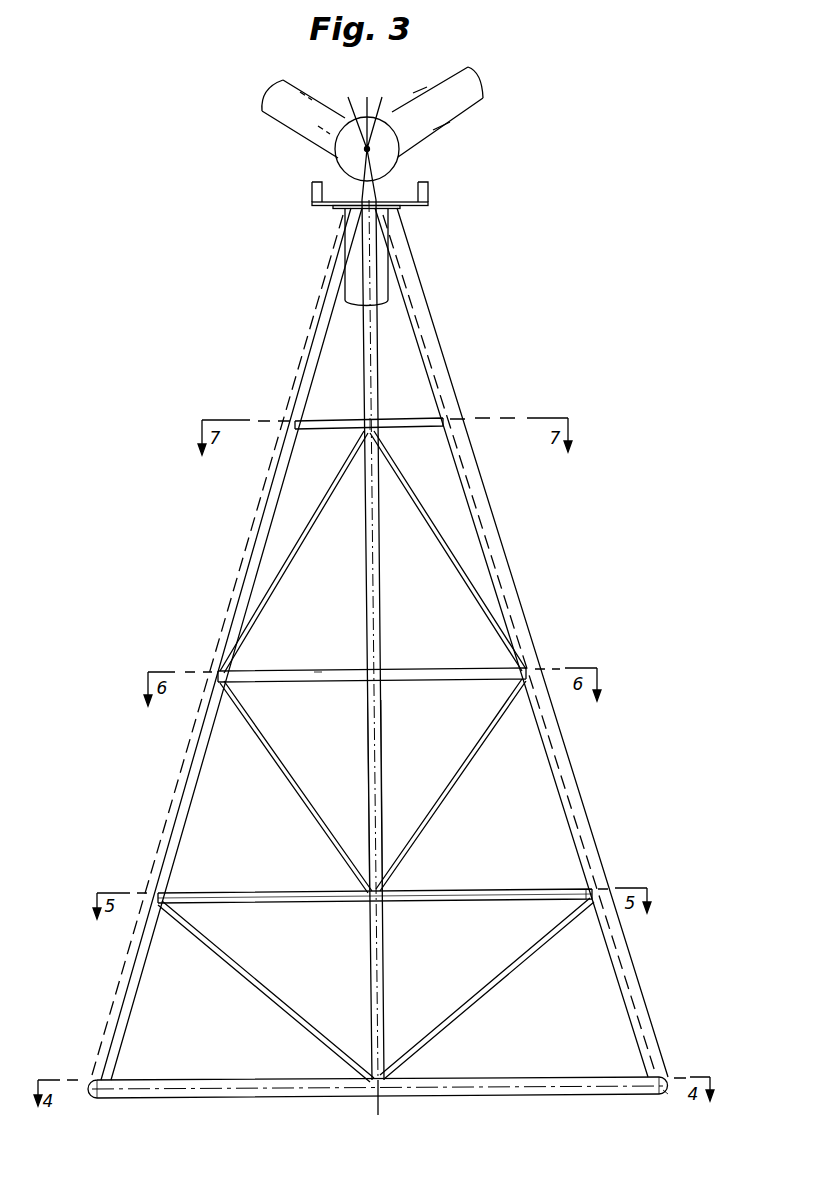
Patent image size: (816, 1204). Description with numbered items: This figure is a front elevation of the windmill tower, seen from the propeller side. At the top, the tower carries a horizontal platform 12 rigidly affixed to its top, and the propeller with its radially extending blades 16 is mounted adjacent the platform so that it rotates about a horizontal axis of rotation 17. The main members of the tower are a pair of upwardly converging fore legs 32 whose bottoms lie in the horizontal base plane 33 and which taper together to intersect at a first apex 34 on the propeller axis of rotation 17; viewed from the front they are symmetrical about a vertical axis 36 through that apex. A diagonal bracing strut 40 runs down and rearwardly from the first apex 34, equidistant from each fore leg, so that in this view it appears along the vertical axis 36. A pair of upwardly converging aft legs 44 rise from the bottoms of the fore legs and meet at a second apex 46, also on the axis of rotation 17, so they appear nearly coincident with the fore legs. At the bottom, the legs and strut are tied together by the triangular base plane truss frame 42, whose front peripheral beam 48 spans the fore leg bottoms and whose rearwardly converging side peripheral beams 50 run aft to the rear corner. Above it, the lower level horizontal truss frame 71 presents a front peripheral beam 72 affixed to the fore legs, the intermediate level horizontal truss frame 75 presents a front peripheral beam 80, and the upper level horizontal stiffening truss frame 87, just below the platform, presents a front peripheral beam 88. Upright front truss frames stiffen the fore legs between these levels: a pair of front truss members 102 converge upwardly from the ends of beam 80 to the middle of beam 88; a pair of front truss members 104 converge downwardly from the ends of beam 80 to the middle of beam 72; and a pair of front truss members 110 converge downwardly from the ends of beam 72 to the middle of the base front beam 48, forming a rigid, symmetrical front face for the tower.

The platform 12 is at (312, 203).
The propeller blade 16 is at (300, 138).
The horizontal axis of rotation 17 is at (392, 112).
The second apex 46 is at (338, 107).
The first apex 34 is at (367, 149).
The fore legs 32 is at (256, 522).
The aft legs 44 is at (232, 588).
The vertical axis 36 is at (375, 608).
The diagonal bracing strut 40 is at (384, 762).
The upper level horizontal stiffening truss frame 87 is at (383, 415).
The front peripheral beam 88 is at (428, 425).
The front truss members 102 is at (291, 560).
The intermediate level horizontal truss frame 75 is at (318, 671).
The front peripheral beam 80 is at (418, 672).
The front truss members 104 is at (284, 773).
The lower level horizontal truss frame 71 is at (530, 886).
The front peripheral beam 72 is at (444, 888).
The front truss members 110 is at (282, 991).
The base plane truss frame 42 is at (540, 1073).
The front peripheral beam 48 is at (328, 1099).
The side peripheral beams 50 is at (87, 1090).
The horizontal base plane 33 is at (670, 1091).